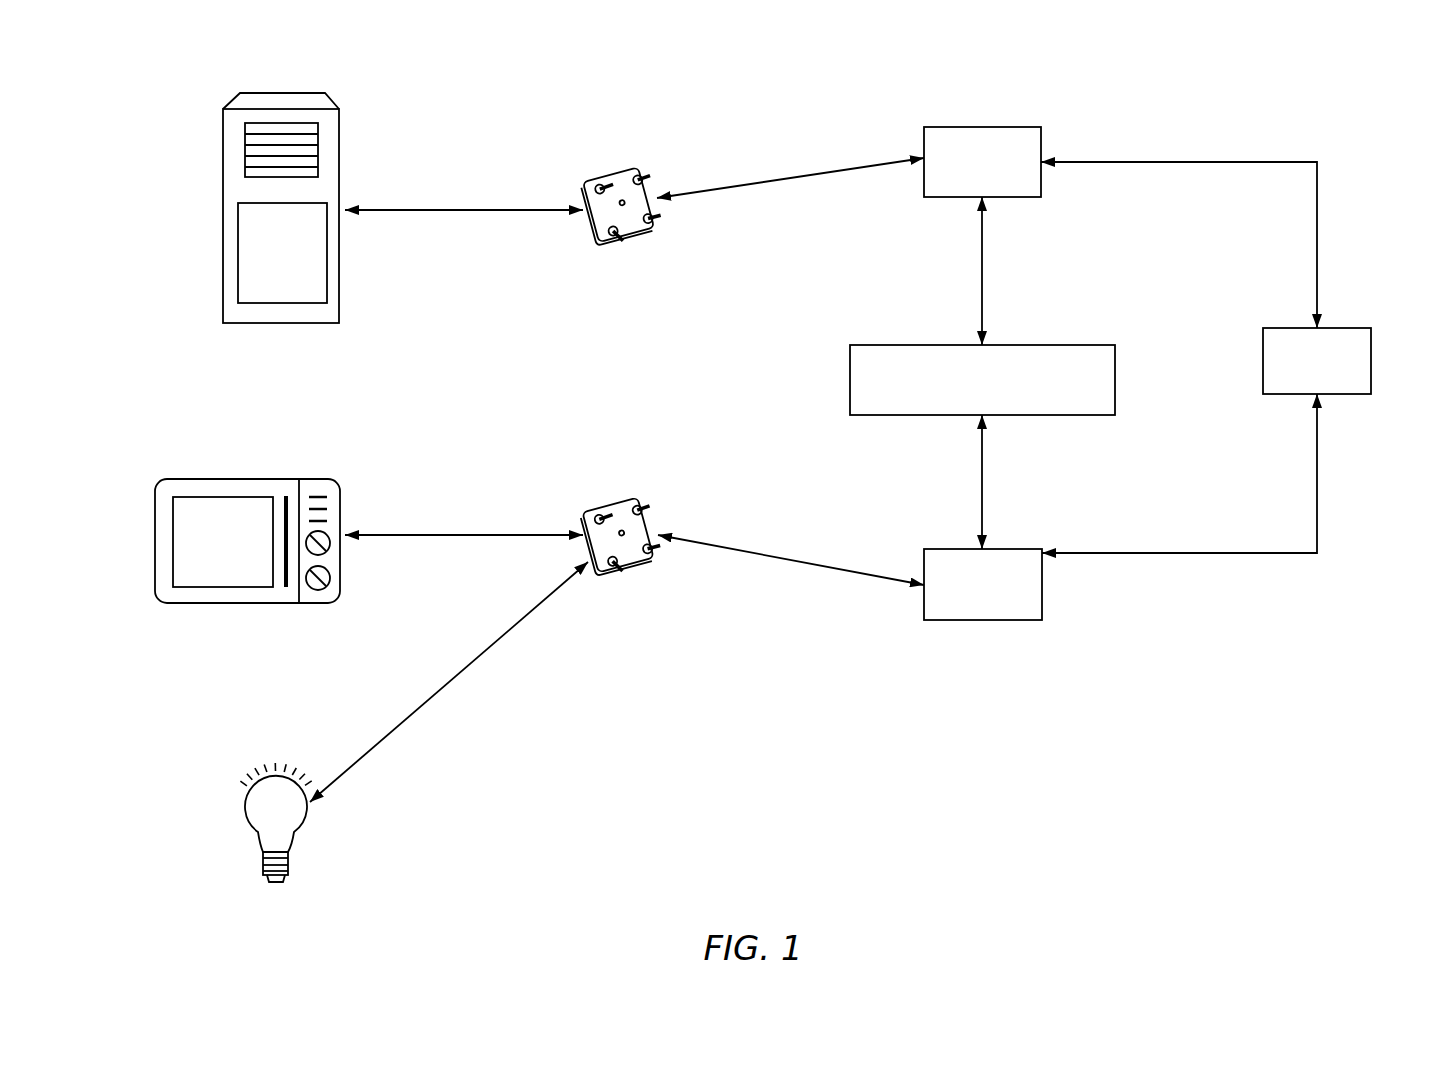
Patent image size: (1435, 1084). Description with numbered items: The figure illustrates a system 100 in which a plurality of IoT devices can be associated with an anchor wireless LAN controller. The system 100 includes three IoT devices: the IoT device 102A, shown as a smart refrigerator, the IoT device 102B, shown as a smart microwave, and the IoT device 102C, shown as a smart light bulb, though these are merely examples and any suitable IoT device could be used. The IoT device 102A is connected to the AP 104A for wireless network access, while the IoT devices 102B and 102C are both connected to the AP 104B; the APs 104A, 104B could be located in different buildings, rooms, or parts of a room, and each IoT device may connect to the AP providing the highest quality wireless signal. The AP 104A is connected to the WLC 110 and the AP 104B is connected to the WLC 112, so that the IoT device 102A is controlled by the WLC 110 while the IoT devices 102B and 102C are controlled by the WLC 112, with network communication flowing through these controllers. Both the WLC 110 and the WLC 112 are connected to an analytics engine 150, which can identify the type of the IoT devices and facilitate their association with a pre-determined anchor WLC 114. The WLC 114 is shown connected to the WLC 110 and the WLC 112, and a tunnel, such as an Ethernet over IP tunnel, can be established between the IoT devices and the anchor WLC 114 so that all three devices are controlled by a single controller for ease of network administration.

The system 100 is at (794, 54).
The IoT device 102A is at (283, 323).
The IoT device 102B is at (246, 603).
The IoT device 102C is at (272, 882).
The AP 104A is at (612, 167).
The AP 104B is at (611, 497).
The WLC 110 is at (982, 162).
The WLC 112 is at (983, 584).
The anchor WLC 114 is at (1317, 361).
The analytics engine 150 is at (982, 380).